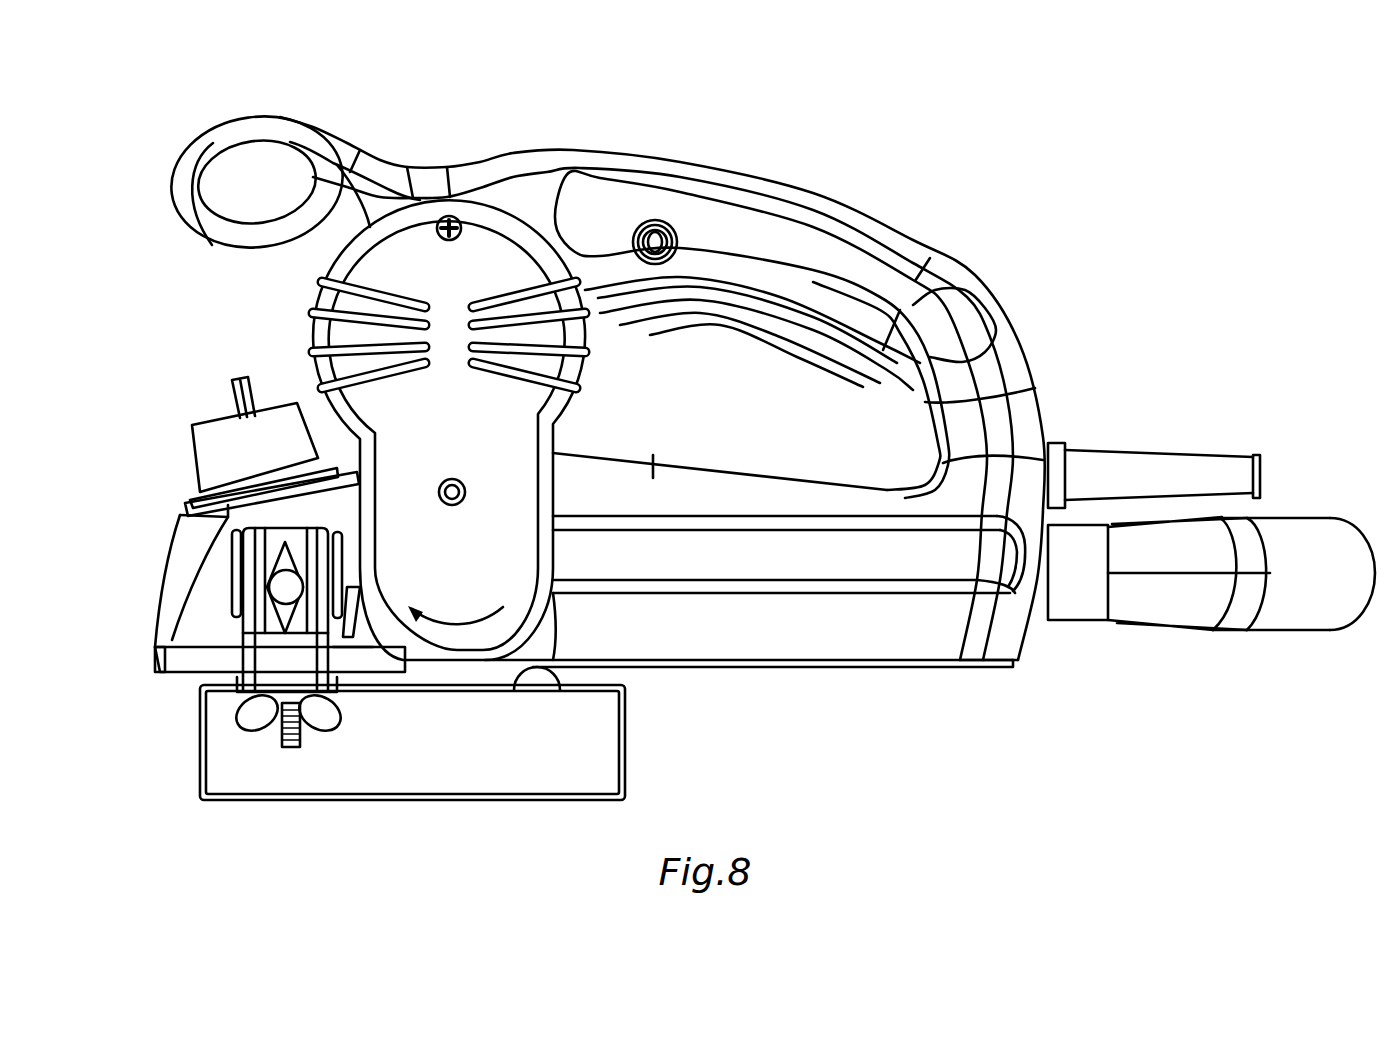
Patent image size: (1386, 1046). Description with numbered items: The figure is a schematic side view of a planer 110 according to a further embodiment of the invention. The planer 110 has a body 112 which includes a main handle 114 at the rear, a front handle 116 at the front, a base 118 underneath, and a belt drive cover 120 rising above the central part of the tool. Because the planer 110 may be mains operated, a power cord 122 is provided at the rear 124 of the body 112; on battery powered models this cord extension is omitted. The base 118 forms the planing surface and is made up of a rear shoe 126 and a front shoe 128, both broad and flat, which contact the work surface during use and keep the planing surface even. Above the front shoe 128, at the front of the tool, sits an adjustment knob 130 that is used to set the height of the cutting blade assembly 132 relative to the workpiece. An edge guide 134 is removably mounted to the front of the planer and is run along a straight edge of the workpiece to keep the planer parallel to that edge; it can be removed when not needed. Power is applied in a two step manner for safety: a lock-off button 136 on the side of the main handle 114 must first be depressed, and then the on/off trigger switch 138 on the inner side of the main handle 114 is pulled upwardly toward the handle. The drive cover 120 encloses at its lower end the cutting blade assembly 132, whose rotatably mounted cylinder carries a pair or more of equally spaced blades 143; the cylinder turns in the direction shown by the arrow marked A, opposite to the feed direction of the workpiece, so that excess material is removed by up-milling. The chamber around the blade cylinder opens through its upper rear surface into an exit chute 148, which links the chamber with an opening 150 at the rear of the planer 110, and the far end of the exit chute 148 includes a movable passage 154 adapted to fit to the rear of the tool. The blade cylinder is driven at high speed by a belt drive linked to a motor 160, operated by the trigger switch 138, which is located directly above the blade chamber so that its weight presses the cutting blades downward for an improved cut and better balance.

The planer 110 is at (895, 148).
The body 112 is at (805, 557).
The main handle 114 is at (917, 312).
The front handle 116 is at (210, 148).
The base 118 is at (720, 640).
The belt drive cover 120 is at (500, 210).
The power cord 122 is at (1213, 470).
The rear 124 is at (1005, 668).
The rear shoe 126 is at (848, 670).
The front shoe 128 is at (203, 660).
The adjustment knob 130 is at (222, 450).
The cutting blade assembly 132 is at (455, 578).
The edge guide 134 is at (388, 753).
The lock-off button 136 is at (663, 213).
The on/off trigger switch 138 is at (752, 320).
The blades 143 is at (470, 660).
The exit chute 148 is at (803, 498).
The opening 150 is at (1007, 553).
The movable passage 154 is at (1085, 593).
The motor 160 is at (423, 273).
The arrow A is at (453, 573).